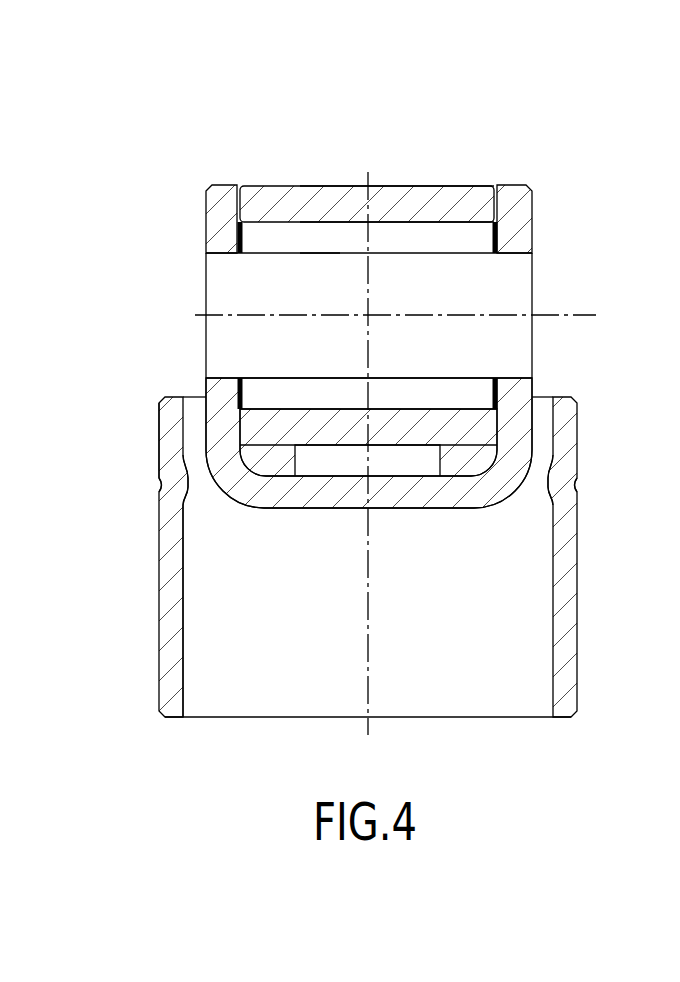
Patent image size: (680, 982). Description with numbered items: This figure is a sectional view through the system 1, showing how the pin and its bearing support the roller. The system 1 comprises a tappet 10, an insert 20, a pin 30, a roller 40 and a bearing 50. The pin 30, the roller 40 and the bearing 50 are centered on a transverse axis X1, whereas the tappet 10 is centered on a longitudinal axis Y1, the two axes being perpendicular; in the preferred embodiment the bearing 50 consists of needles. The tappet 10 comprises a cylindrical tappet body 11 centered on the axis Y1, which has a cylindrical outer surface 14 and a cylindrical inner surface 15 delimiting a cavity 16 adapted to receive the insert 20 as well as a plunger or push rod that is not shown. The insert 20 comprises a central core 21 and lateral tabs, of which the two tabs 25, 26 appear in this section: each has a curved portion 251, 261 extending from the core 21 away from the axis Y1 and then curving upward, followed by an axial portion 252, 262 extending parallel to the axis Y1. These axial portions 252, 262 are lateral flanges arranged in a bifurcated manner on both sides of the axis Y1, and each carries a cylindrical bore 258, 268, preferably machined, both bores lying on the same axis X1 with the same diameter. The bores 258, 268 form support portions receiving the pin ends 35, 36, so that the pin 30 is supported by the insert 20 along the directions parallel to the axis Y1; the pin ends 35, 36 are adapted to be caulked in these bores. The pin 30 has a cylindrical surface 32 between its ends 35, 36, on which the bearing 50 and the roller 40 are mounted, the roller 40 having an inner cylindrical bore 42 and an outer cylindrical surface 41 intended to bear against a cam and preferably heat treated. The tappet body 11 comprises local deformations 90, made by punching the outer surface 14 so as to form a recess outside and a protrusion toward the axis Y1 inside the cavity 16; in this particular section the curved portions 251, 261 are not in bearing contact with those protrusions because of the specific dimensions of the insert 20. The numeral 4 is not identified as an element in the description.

The system 1 is at (367, 225).
The partial numeral (cut off) 4 is at (3, 661).
The tappet 10 is at (354, 594).
The tappet body 11 is at (170, 646).
The outer surface 14 is at (140, 606).
The inner surface 15 is at (205, 622).
The cavity 16 is at (280, 684).
The insert 20 is at (369, 505).
The central core 21 is at (425, 497).
The lateral tab 25 is at (206, 213).
The lateral tab 26 is at (518, 212).
The pin 30 is at (280, 262).
The cylindrical surface 32 is at (317, 236).
The pin end 35 is at (230, 346).
The pin end 36 is at (505, 355).
The roller 40 is at (387, 203).
The outer cylindrical surface 41 is at (440, 170).
The inner cylindrical bore 42 is at (411, 243).
The bearing 50 is at (277, 416).
The local deformation 90 is at (146, 487).
The curved portion 251 is at (238, 485).
The axial portion 252 is at (218, 421).
The cylindrical bore 258 is at (228, 272).
The curved portion 261 is at (500, 488).
The axial portion 262 is at (513, 423).
The cylindrical bore 268 is at (512, 270).
The transverse axis X1 is at (408, 314).
The longitudinal axis Y1 is at (367, 470).